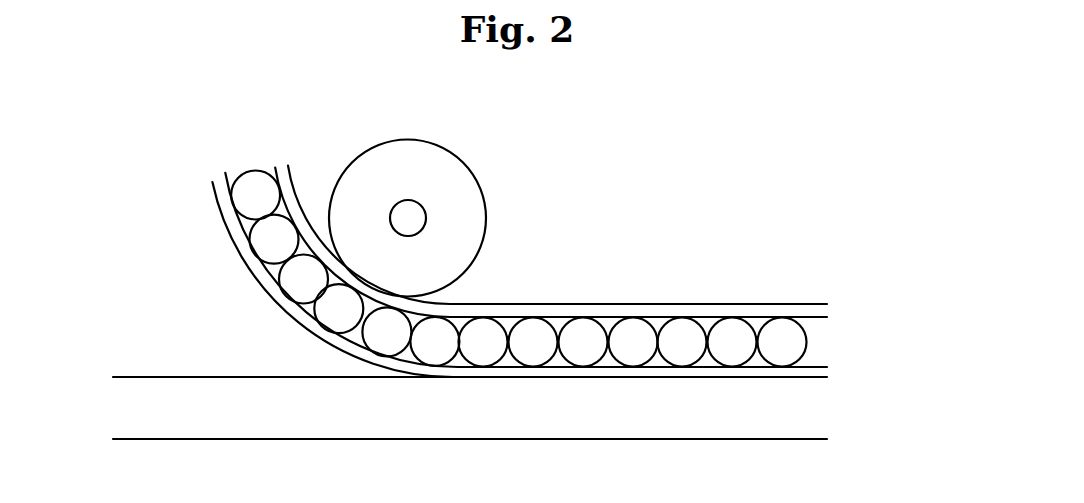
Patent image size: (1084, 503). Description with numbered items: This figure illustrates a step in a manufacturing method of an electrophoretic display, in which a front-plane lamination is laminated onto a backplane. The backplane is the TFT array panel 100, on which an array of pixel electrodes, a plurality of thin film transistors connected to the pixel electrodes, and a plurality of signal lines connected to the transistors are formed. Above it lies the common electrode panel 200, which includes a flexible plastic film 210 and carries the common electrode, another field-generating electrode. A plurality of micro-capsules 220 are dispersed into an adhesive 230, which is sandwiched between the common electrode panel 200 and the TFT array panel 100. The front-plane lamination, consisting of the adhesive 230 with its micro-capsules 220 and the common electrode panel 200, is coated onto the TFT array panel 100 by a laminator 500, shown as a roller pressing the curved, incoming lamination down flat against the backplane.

The TFT array panel 100 is at (830, 410).
The common electrode panel 200 is at (538, 271).
The flexible plastic film 210 is at (742, 305).
The micro-capsules 220 is at (682, 322).
The adhesive 230 is at (228, 235).
The laminator 500 is at (463, 155).